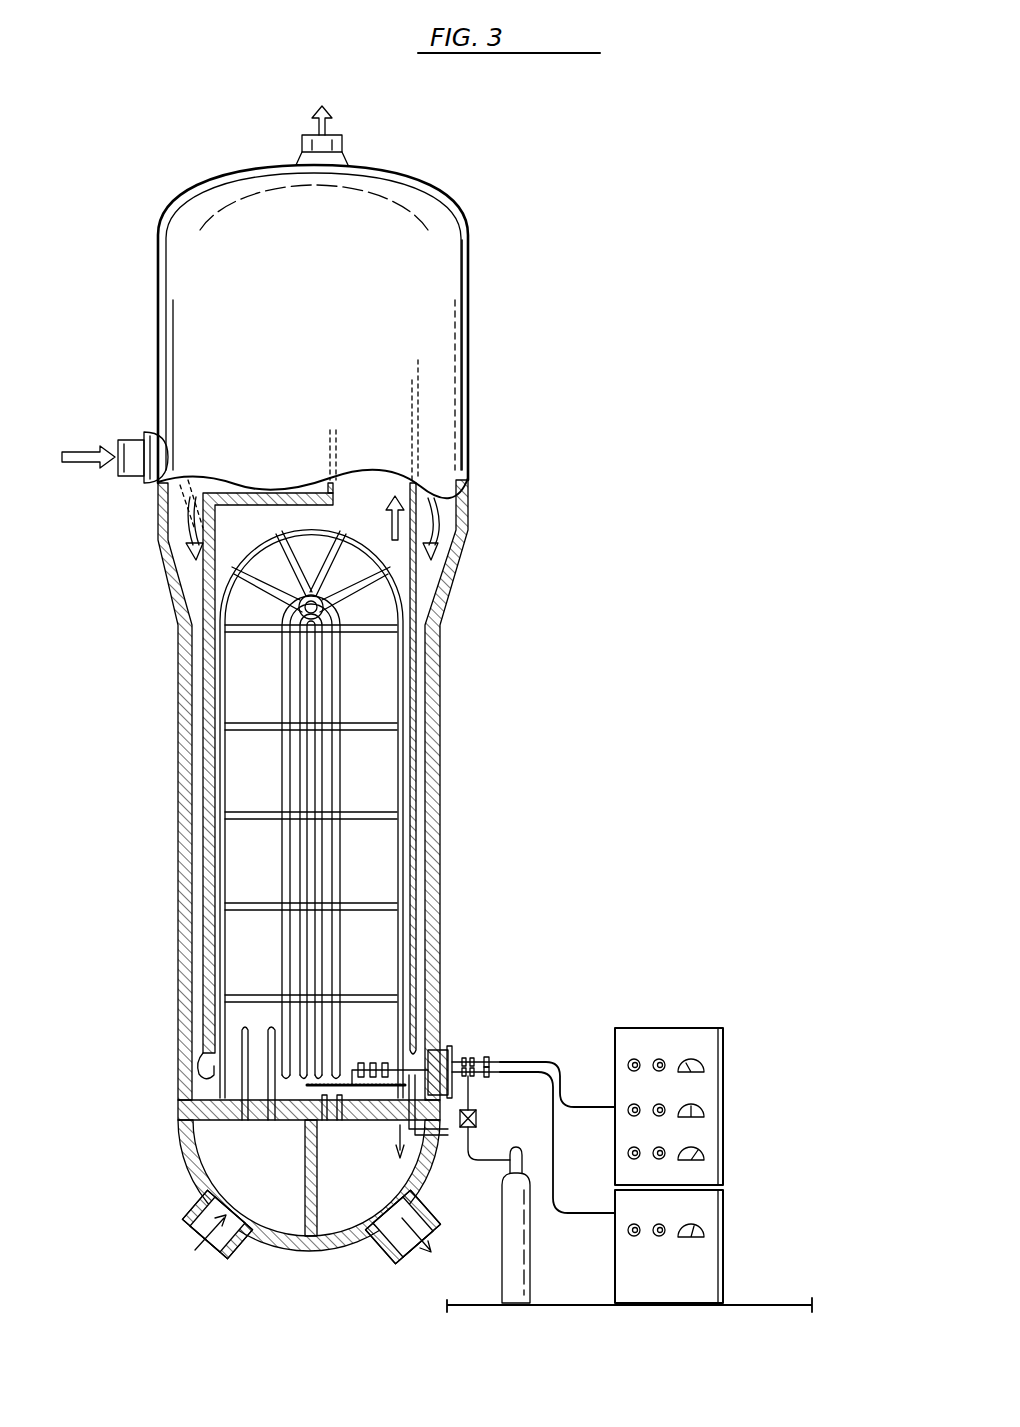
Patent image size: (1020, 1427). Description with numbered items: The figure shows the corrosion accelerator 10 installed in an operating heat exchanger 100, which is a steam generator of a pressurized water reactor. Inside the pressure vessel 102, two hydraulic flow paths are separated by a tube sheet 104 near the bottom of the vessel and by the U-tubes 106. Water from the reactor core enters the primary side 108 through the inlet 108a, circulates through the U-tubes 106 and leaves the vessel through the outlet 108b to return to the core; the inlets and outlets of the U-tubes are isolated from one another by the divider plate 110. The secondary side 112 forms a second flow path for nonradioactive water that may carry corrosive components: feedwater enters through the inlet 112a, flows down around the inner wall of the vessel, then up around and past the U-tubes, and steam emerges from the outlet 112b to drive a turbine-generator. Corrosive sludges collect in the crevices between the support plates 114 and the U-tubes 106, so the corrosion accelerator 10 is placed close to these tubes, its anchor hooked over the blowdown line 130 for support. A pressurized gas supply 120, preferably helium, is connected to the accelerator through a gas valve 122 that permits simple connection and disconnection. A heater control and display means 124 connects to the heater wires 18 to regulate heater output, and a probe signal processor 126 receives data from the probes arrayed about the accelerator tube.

The corrosion accelerator 10 is at (390, 1054).
The heater wires 18 is at (553, 1213).
The heat exchanger 100 is at (468, 423).
The pressure vessel 102 is at (190, 315).
The tube sheet 104 is at (376, 1120).
The U-tubes 106 is at (400, 874).
The primary side 108 is at (270, 1181).
The inlet 108a is at (185, 1215).
The outlet 108b is at (423, 1207).
The divider plate 110 is at (300, 1205).
The secondary side 112 is at (215, 552).
The inlet 112a is at (125, 440).
The outlet 112b is at (345, 140).
The support plates 114 is at (268, 555).
The pressurized gas supply 120 is at (522, 1285).
The gas valve 122 is at (478, 1120).
The heater control and display means 124 is at (712, 1258).
The probe signal processor 126 is at (710, 1088).
The blowdown line 130 is at (438, 1060).